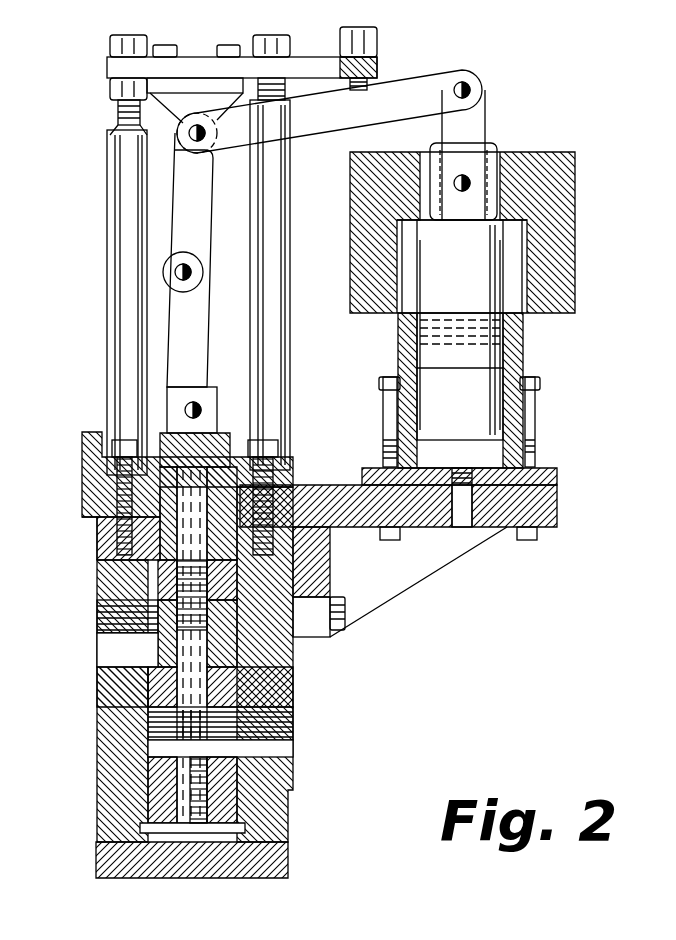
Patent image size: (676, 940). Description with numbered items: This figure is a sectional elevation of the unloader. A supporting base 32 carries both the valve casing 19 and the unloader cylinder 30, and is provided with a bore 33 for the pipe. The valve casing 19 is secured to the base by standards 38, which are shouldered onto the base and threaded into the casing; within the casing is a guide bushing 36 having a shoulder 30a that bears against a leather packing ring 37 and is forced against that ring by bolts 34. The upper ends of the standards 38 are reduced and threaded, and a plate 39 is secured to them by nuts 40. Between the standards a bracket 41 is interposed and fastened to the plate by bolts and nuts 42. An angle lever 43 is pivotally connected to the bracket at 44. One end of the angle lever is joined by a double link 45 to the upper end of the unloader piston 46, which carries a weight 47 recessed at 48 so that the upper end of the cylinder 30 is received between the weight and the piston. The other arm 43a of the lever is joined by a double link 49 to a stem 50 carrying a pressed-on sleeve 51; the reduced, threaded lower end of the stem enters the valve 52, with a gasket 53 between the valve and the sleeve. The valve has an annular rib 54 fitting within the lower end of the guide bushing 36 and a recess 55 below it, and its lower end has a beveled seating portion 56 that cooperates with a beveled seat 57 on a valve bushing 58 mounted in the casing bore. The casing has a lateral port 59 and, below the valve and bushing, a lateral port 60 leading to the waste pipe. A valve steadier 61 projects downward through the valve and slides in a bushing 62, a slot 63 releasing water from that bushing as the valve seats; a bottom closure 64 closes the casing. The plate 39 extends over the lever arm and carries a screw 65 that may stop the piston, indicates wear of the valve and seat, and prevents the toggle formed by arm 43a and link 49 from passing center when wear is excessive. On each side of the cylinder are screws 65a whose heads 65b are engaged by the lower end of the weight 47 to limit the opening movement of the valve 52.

The valve casing 19 is at (292, 650).
The unloader cylinder 30 is at (525, 419).
The body step 30a is at (110, 540).
The supporting base 32 is at (432, 510).
The bore 33 is at (470, 520).
The bolts 34 is at (112, 447).
The guide bushing 36 is at (140, 497).
The leather packing ring 37 is at (125, 549).
The standards 38 is at (110, 352).
The plate 39 is at (193, 64).
The nuts 40 is at (110, 88).
The bracket 41 is at (195, 102).
The bolts and nuts 42 is at (165, 45).
The angle lever 43 is at (329, 111).
The arm of the angle lever 43a is at (178, 218).
The pivotal connection 44 is at (128, 146).
The double link 45 is at (488, 118).
The unloader piston 46 is at (460, 330).
The weight 47 is at (568, 244).
The recess 48 is at (525, 235).
The double link 49 is at (198, 302).
The stem 50 is at (206, 395).
The sleeve 51 is at (168, 549).
The valve 52 is at (170, 600).
The gasket 53 is at (172, 572).
The annular rib or projection 54 is at (160, 614).
The recess 55 is at (155, 634).
The beveled seating portion 56 is at (160, 662).
The beveled seat 57 is at (245, 677).
The valve bushing 58 is at (160, 696).
The lateral port 59 is at (112, 648).
The lateral port 60 is at (282, 740).
The valve steadier 61 is at (185, 733).
The bushing 62 is at (182, 790).
The slot 63 is at (186, 790).
The bottom closure 64 is at (178, 855).
The screw 65 is at (378, 36).
The screws 65a is at (383, 430).
The heads 65b is at (390, 377).